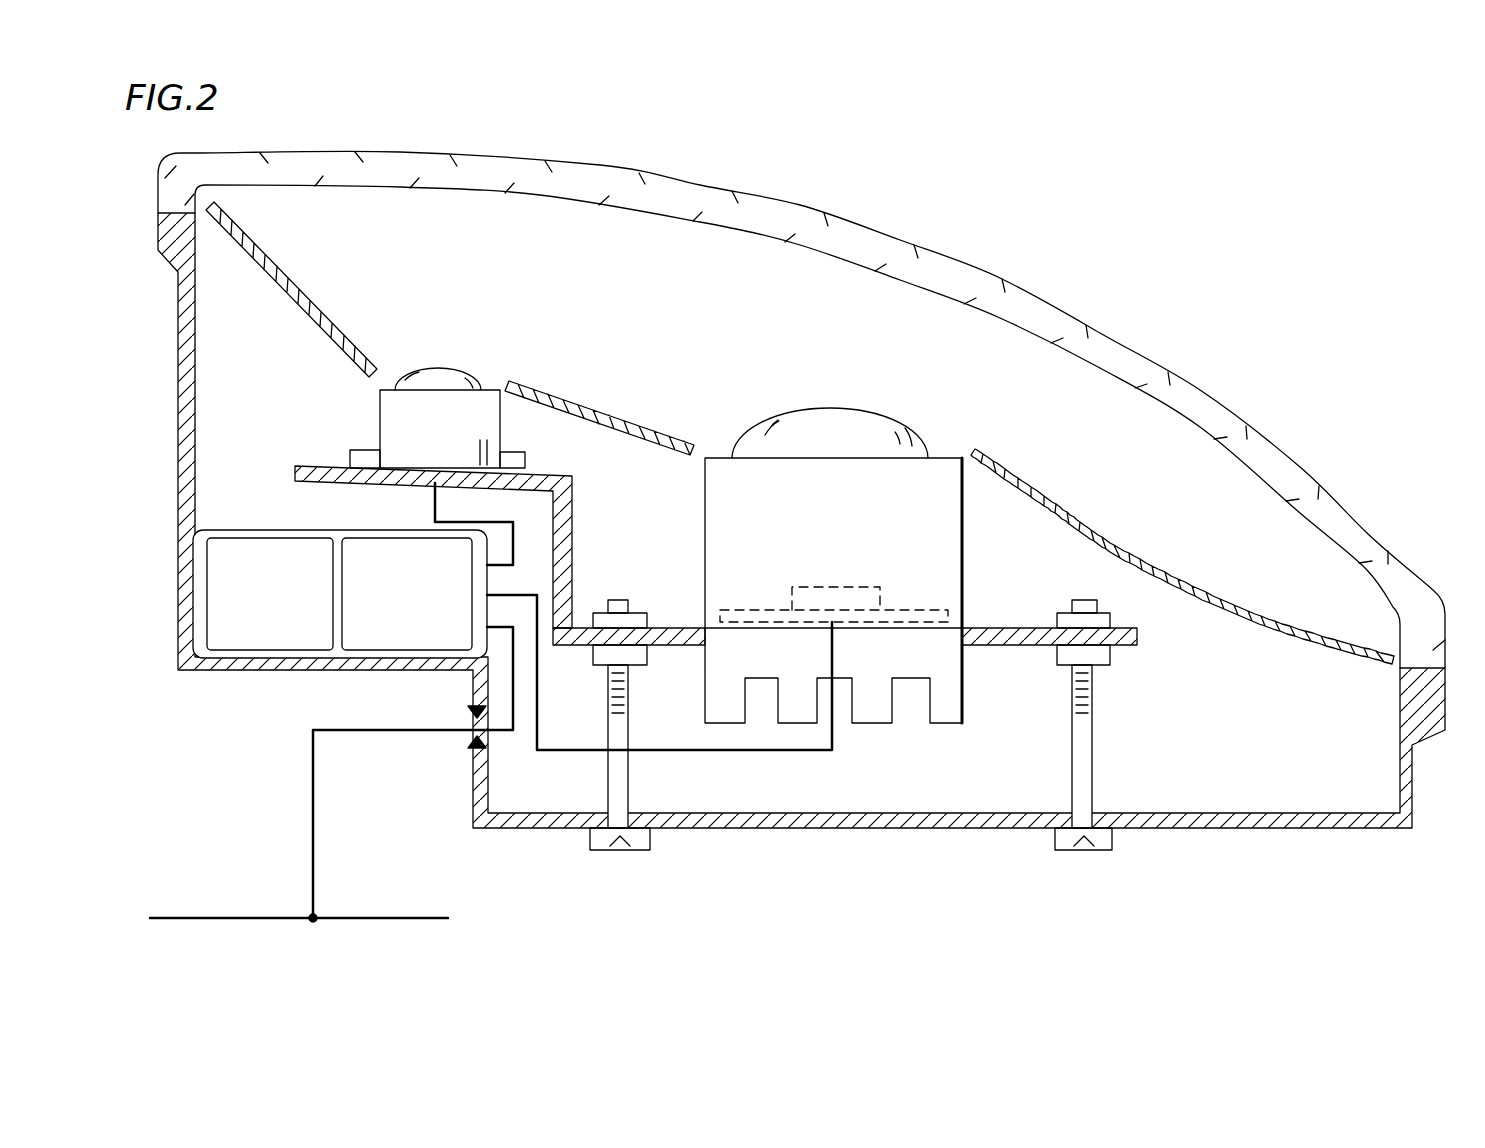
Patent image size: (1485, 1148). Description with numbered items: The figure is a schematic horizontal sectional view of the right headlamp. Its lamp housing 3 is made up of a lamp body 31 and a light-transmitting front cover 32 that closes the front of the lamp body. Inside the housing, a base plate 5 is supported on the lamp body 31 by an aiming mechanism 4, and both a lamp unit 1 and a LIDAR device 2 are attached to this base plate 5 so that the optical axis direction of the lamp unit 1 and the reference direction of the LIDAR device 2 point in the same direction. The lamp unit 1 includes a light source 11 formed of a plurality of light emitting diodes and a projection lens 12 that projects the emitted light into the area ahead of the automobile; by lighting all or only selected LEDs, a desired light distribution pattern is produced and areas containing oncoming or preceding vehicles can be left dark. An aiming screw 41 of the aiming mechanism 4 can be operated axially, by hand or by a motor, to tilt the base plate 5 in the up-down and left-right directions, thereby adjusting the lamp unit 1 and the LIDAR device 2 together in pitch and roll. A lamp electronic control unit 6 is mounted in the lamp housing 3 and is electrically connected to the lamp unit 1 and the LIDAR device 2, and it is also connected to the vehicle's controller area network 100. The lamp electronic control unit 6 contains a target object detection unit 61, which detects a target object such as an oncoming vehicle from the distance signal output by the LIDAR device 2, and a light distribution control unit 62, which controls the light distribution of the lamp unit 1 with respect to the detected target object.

The lamp unit 1 is at (868, 464).
The LIDAR device 2 is at (422, 327).
The lamp housing 3 is at (814, 409).
The aiming mechanism 4 is at (899, 763).
The base plate 5 is at (1135, 642).
The lamp electronic control unit 6 is at (293, 627).
The light source 11 is at (887, 583).
The projection lens 12 is at (813, 420).
The lamp body 31 is at (1305, 830).
The front cover 32 is at (1208, 405).
The aiming screw 41 is at (632, 850).
The target object detection unit 61 is at (247, 660).
The light distribution control unit 62 is at (408, 657).
The controller area network 100 is at (275, 915).